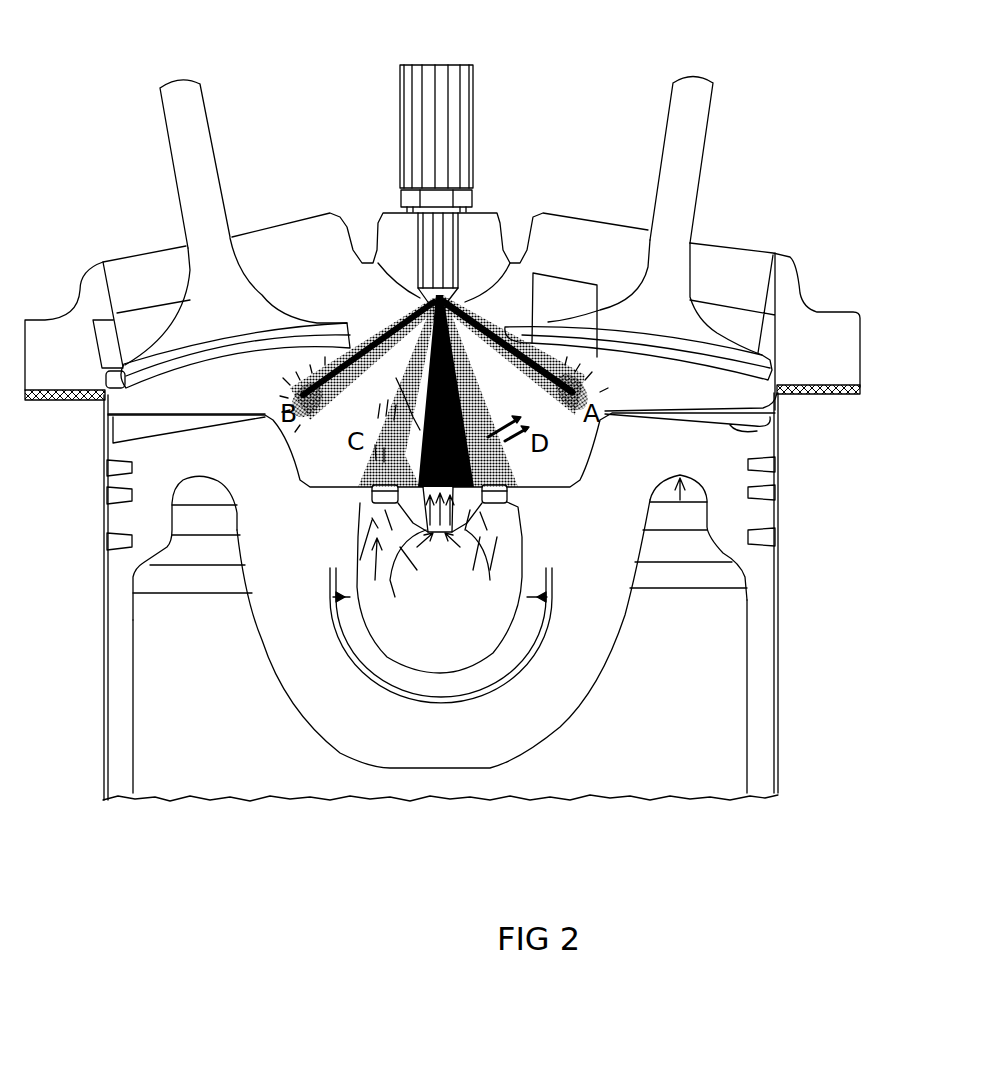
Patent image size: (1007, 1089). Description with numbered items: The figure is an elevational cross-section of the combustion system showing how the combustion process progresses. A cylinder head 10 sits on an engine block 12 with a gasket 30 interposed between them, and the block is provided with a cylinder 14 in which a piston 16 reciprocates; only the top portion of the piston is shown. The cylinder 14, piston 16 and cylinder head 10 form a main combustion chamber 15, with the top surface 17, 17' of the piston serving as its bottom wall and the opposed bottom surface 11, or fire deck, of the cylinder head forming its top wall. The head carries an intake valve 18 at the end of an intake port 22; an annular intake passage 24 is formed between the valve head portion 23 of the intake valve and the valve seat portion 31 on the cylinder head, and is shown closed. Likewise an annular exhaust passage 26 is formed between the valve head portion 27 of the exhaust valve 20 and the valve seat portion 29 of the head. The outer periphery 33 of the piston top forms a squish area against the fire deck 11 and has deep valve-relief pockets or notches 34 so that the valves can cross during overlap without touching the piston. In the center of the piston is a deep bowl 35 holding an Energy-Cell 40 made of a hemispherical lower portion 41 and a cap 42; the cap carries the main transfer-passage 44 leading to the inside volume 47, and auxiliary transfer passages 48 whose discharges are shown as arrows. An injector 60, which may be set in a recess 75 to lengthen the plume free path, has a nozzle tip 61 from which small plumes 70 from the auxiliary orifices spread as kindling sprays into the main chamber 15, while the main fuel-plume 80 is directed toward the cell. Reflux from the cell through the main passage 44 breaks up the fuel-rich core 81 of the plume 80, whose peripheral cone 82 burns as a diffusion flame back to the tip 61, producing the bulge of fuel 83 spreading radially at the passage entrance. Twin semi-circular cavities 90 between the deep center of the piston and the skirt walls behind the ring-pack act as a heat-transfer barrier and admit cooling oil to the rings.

The cylinder head 10 is at (766, 192).
The bottom surface (fire deck) 11 is at (563, 320).
The engine block 12 is at (840, 631).
The cylinder 14 is at (775, 727).
The main combustion chamber 15 is at (673, 409).
The piston 16 is at (328, 781).
The top surface of piston 17 is at (247, 393).
The squish lip 17' is at (448, 465).
The intake valve 18 is at (708, 321).
The exhaust valve 20 is at (157, 343).
The intake port 22 is at (750, 245).
The valve head portion of intake valve 23 is at (597, 353).
The annular intake passage 24 is at (763, 353).
The annular exhaust passage 26 is at (345, 320).
The valve head portion of exhaust valve 27 is at (125, 390).
The valve seat portion (exhaust) 29 is at (25, 350).
The gasket 30 is at (863, 388).
The valve seat portion (intake) 31 is at (573, 353).
The outer periphery (squish area) 33 is at (763, 407).
The valve-relief piston pockets (notches) 34 is at (147, 437).
The deep bowl 35 is at (487, 676).
The Energy-Cell 40 is at (372, 699).
The lower portion of Energy-Cell 41 is at (340, 643).
The cap of Energy-Cell 42 is at (527, 483).
The main transfer-passage 44 is at (409, 603).
The inside volume of Energy-Cell 47 is at (497, 614).
The auxiliary transfer passages 48 is at (370, 493).
The injector 60 is at (497, 145).
The nozzle tip 61 is at (458, 253).
The plumes (auxiliary sprays) 70 is at (340, 401).
The recess for injector 75 is at (413, 313).
The main fuel-plume 80 is at (473, 376).
The core of main fuel-plume 81 is at (401, 392).
The peripheral cone of main fuel-plume 82 is at (460, 435).
The bulge of fuel 83 is at (390, 455).
The twin semi-circular cavities 90 is at (208, 503).